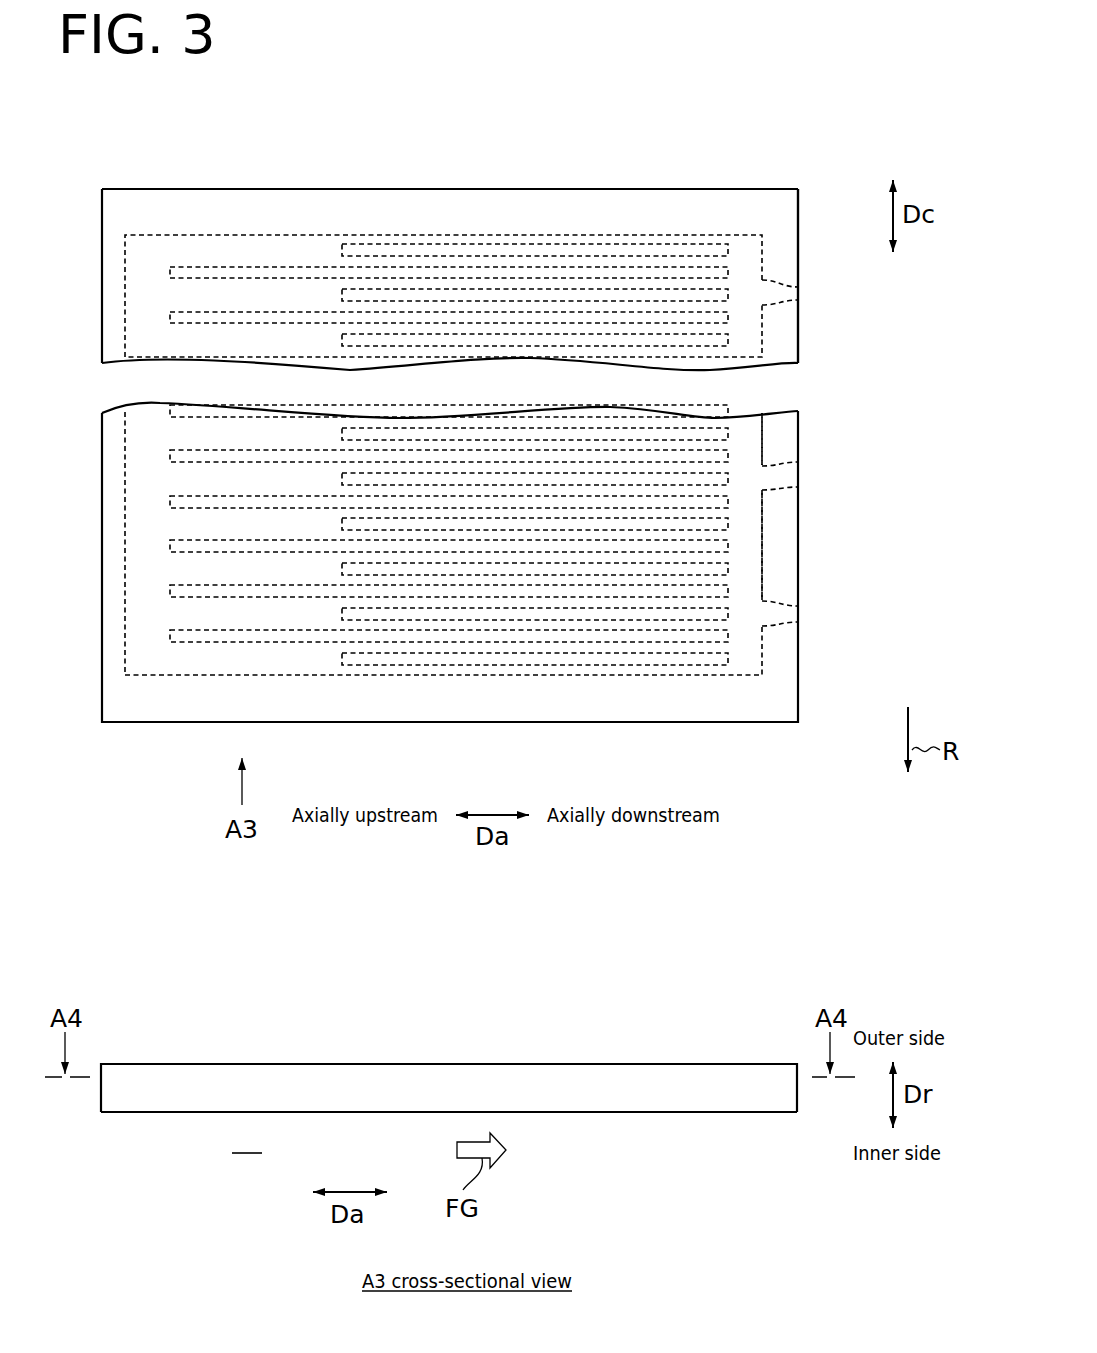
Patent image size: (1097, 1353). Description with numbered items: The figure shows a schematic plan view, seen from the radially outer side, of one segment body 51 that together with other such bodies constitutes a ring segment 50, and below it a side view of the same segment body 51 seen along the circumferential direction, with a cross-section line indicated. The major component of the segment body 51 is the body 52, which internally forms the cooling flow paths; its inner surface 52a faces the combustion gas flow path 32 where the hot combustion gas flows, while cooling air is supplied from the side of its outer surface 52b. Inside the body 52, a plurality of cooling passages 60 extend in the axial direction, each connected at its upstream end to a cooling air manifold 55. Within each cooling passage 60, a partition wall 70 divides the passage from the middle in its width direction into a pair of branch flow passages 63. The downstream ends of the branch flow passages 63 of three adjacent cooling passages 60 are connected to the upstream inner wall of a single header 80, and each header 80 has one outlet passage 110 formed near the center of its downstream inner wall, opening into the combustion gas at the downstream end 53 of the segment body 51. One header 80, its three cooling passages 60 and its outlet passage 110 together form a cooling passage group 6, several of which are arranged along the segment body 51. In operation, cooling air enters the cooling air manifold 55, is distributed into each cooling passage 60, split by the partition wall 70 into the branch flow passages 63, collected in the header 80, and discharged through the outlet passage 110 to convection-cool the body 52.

The ring segment 50 is at (487, 405).
The segment body 51 is at (722, 143).
The body 52 is at (233, 199).
The inner surface 52a is at (713, 1113).
The outer surface 52b is at (390, 195).
The downstream end 53 is at (798, 222).
The cooling passage group 6 is at (820, 324).
The combustion gas flow path 32 is at (248, 1141).
The cooling air manifold 55 is at (140, 467).
The cooling passage 60 is at (190, 653).
The branch flow passage 63 is at (428, 600).
The partition wall 70 is at (586, 622).
The header 80 is at (740, 461).
The outlet passage 110 is at (782, 482).